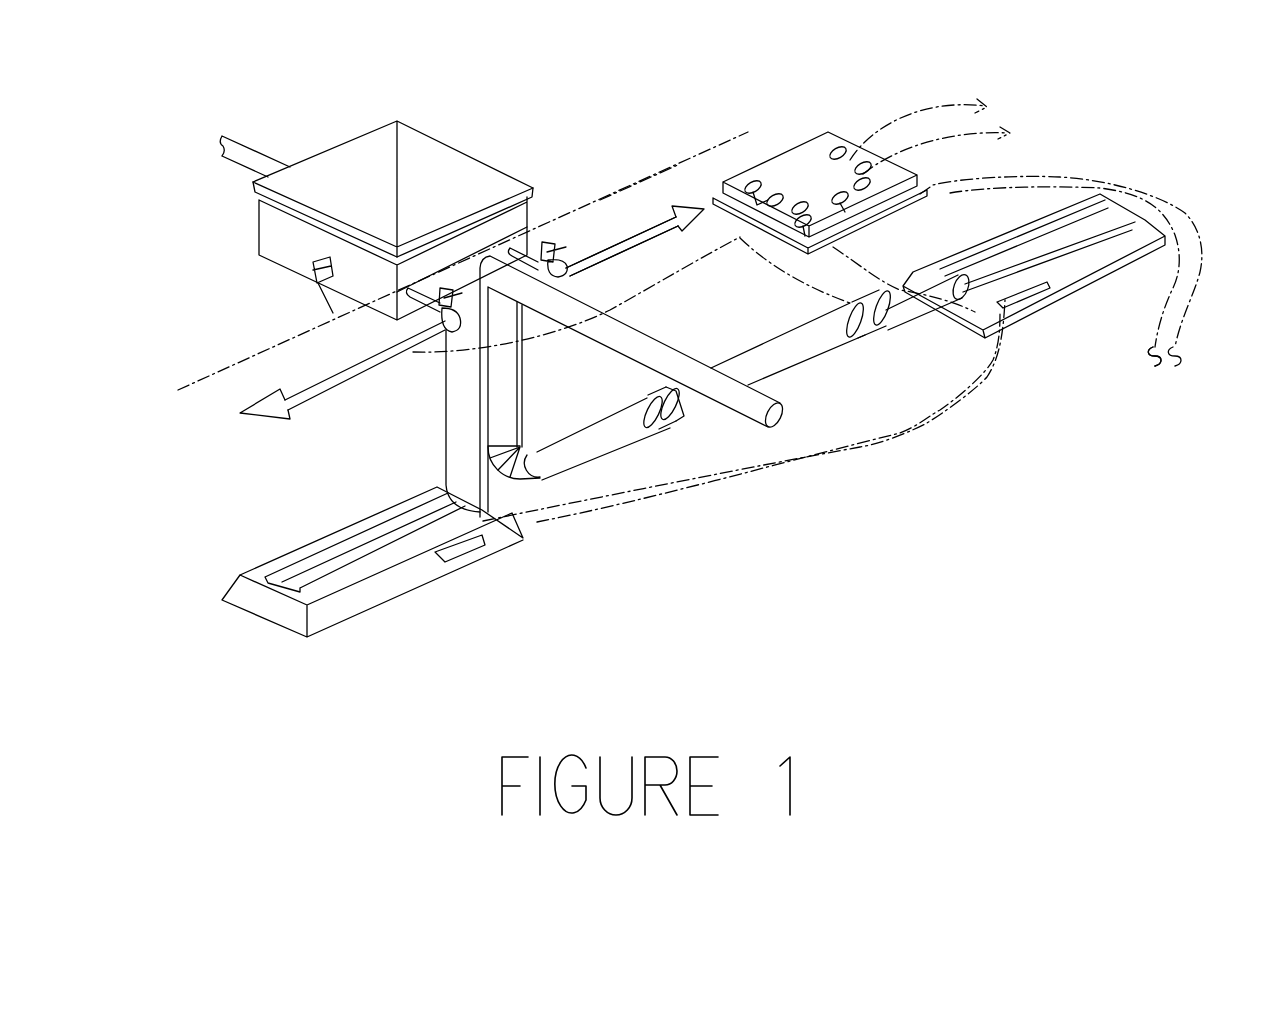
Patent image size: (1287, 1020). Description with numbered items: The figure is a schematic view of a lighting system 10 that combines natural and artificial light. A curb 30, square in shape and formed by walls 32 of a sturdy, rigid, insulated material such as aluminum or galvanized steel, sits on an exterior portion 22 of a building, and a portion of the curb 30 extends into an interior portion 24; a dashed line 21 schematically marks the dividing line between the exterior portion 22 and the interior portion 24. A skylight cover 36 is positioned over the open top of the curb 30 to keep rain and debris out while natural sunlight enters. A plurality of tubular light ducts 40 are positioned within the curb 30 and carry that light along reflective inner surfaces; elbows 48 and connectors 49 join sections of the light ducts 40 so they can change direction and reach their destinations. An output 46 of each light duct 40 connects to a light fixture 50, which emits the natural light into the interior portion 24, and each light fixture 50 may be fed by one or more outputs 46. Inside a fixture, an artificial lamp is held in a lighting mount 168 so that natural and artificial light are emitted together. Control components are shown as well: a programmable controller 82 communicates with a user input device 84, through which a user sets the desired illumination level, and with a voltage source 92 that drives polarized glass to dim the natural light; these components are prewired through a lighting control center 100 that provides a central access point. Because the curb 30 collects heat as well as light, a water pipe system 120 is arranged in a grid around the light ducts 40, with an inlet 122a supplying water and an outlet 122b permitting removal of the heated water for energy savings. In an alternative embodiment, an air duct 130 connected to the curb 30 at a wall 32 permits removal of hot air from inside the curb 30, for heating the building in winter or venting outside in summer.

The lighting system 10 is at (618, 100).
The dashed line 21 is at (727, 140).
The exterior portion 22 is at (647, 163).
The interior portion 24 is at (763, 158).
The curb 30 is at (363, 222).
The walls 32 is at (344, 252).
The skylight cover 36 is at (457, 150).
The light ducts 40 is at (445, 423).
The output 46 is at (957, 303).
The elbows 48 is at (530, 450).
The connectors 49 is at (673, 425).
The light fixture 50 is at (300, 550).
The controller 82 is at (1160, 369).
The user input device 84 is at (1178, 347).
The voltage source 92 is at (310, 294).
The lighting control center 100 is at (790, 146).
The water pipe system 120 is at (367, 360).
The inlet 122a is at (245, 418).
The outlet 122b is at (683, 203).
The air duct 130 is at (221, 140).
The lighting mount 168 is at (473, 553).